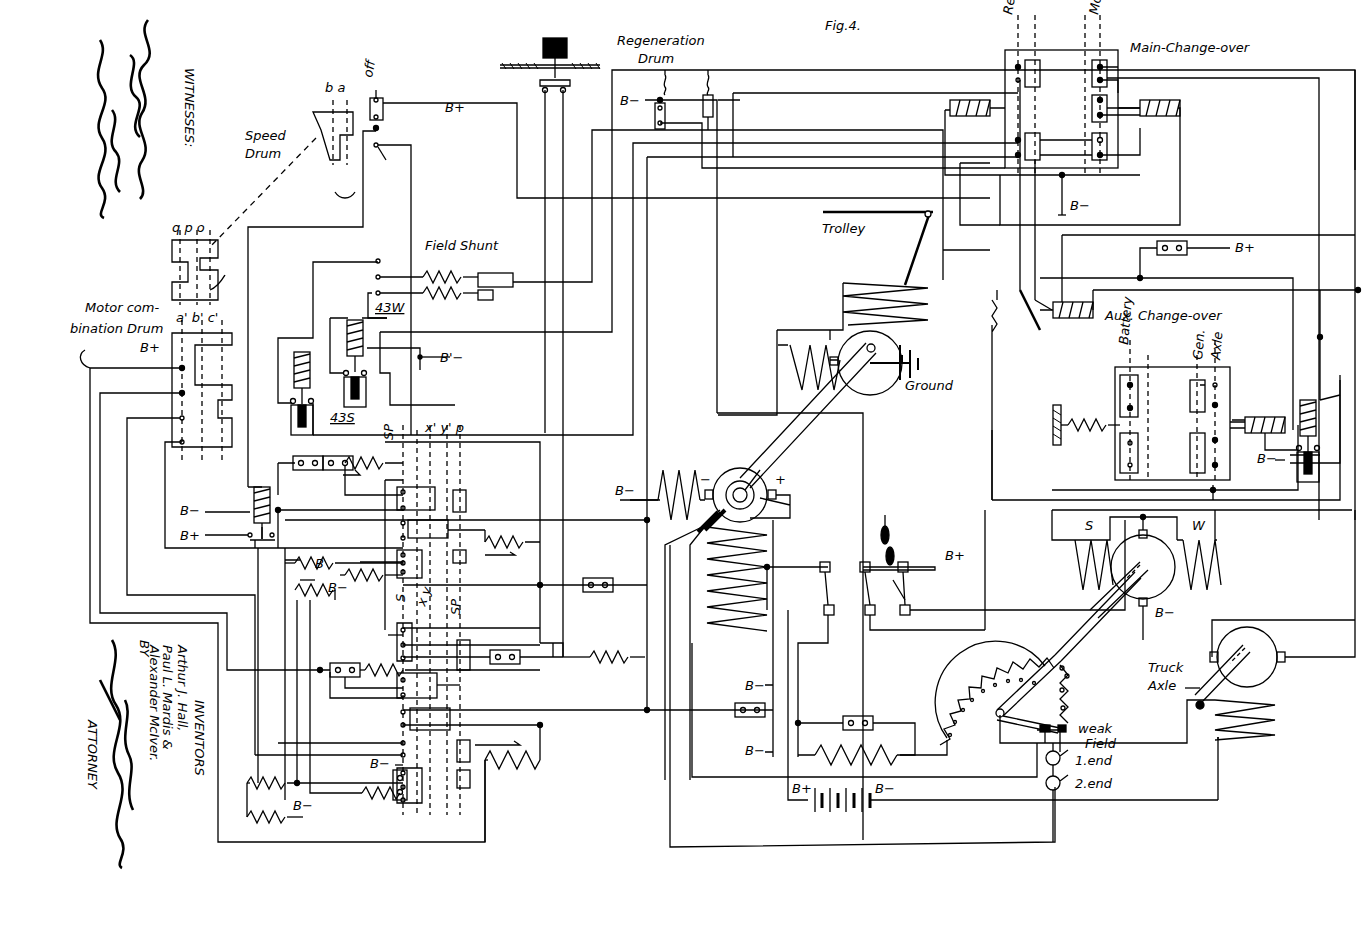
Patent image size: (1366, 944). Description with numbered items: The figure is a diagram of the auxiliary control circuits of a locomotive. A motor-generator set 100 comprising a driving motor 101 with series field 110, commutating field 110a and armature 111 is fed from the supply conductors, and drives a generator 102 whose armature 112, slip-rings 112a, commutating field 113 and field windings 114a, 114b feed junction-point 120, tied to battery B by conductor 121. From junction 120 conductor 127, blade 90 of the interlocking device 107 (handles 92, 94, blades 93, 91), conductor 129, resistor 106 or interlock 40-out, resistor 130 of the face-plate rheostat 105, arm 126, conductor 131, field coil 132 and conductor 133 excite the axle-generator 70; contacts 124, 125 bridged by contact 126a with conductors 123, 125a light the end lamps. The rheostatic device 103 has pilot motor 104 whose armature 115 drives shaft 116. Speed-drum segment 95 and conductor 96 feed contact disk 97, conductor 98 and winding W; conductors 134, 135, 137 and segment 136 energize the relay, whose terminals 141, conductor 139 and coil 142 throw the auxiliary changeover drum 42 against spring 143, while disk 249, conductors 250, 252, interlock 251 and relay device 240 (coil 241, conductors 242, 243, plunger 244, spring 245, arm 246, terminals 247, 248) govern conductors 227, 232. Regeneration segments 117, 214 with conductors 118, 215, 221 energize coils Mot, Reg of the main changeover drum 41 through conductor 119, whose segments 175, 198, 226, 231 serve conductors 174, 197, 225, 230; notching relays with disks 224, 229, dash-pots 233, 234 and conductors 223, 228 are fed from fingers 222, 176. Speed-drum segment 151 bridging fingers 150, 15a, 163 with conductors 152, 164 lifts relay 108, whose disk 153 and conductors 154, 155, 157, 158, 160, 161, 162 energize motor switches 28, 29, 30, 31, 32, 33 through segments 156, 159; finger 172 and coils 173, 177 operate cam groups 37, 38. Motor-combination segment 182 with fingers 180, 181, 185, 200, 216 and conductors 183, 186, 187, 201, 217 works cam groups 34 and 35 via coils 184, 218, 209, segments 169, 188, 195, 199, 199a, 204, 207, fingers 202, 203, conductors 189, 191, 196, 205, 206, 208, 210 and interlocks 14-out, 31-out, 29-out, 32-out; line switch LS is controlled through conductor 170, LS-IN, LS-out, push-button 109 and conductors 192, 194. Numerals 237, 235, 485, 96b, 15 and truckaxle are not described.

The contact segment 151 is at (172, 252).
The contact segment 95 is at (388, 100).
The conductor 96 is at (686, 139).
The control finger 150 is at (394, 123).
The control finger 15a is at (330, 308).
The control finger 163 is at (392, 160).
The conductor 152 is at (341, 188).
The conductor 164 is at (411, 200).
The control finger 180 is at (227, 280).
The conductor 223 is at (313, 300).
The control finger 222 is at (384, 251).
The control finger 172 is at (384, 271).
The control finger 176 is at (383, 299).
The actuating coil 173 is at (450, 268).
The actuating coil 177 is at (450, 298).
The cam group 37 is at (495, 271).
The cam group 38 is at (492, 299).
The conductor 174 is at (728, 196).
The contact disk 224 is at (292, 402).
The dash-pot 233 is at (279, 417).
The conductor 228 is at (356, 336).
The dash-pot 234 is at (346, 389).
The contact disk 229 is at (411, 368).
The wire 237 is at (867, 295).
The wire 235 is at (400, 400).
The conductor 230 is at (785, 62).
The conductor 225 is at (665, 426).
The conductor 118 is at (795, 143).
The conductor 217 is at (463, 563).
The contact segment 182 is at (209, 390).
The conductor 183 is at (84, 357).
The control finger 181 is at (287, 604).
The control finger 185 is at (180, 393).
The conductor 186 is at (243, 670).
The control finger 200 is at (191, 580).
The control finger 216 is at (163, 438).
The conductor 201 is at (135, 522).
The motor switch relay 108 is at (254, 493).
The contact disk 153 is at (262, 665).
The conductor 162 is at (283, 578).
The conductor 206 is at (340, 520).
The conductor 205 is at (340, 626).
The conductor 208 is at (340, 479).
The interlock 29-out is at (304, 453).
The interlock 32-out is at (347, 453).
The conductor 210 is at (373, 453).
The actuating coil 209 is at (384, 455).
The conductor 154 is at (300, 560).
The motor switch 30 is at (349, 552).
The conductor 155 is at (337, 560).
The conductor 157 is at (385, 560).
The motor switch 29 is at (360, 585).
The motor switch 32 is at (320, 593).
The conductor 158 is at (305, 630).
The conductor 160 is at (297, 645).
The contact segment 169 is at (380, 630).
The interlock 31-out is at (340, 661).
The switch blade 90 is at (593, 624).
The conductor 189 is at (374, 687).
The conductor 187 is at (328, 696).
The control finger 203 is at (388, 734).
The control finger 202 is at (330, 747).
The conductor 161 is at (349, 693).
The motor switch 33 is at (272, 797).
The motor switch 28 is at (275, 826).
The motor switch 31 is at (356, 709).
The contact segment 159 is at (419, 794).
The wire 485 is at (445, 845).
The cam group 35 is at (462, 542).
The contact segment 207 is at (422, 495).
The contact segment 199 is at (445, 530).
The conductor 194 is at (565, 507).
The actuating coil 218 is at (494, 540).
The contact segment 156 is at (440, 575).
The conductor 196 is at (525, 592).
The interlock 14-out is at (596, 576).
The cam group 34 is at (491, 617).
The contact segment 195 is at (471, 649).
The contact LS-IN is at (483, 651).
The conductor 192 is at (545, 122).
The conductor 170 is at (563, 628).
The line switch LS is at (604, 646).
The conductor 191 is at (520, 665).
The contact segment 188 is at (460, 695).
The contact segment 199a is at (472, 719).
The interlock LS-out is at (588, 718).
The contact segment 204 is at (488, 759).
The actuating coil 184 is at (492, 763).
The push-button 109 is at (549, 65).
The contact segment 214 is at (713, 100).
The contact segment 117 is at (655, 125).
The conductor 215 is at (863, 457).
The contact segment 231 is at (901, 105).
The series exciting field winding 110 is at (878, 268).
The conductor 221 is at (950, 252).
The motor-generator set 100 is at (790, 349).
The commutating field winding 110a is at (788, 350).
The driving motor 101 is at (878, 359).
The armature 111 is at (820, 415).
The generator 102 is at (720, 614).
The armature 112 is at (734, 490).
The commutating field winding 113 is at (667, 484).
The conductor 197 is at (640, 474).
The slip-rings 112a is at (789, 506).
The exciting field winding 114a is at (757, 579).
The exciting field winding 114b is at (721, 611).
The junction-point 120 is at (797, 577).
The conductor 123 is at (864, 707).
The conductor 127 is at (825, 556).
The conductor 121 is at (816, 664).
The conductor 129 is at (798, 668).
The electrical interlock 40-out is at (857, 714).
The auxiliary resistor 106 is at (881, 747).
The operating handle 92 is at (888, 549).
The interlocking knife-blade device 107 is at (899, 540).
The switch blade 93 is at (859, 588).
The handle 94 is at (886, 580).
The switch blade 91 is at (927, 596).
The conductor 139 is at (1143, 594).
The battery B is at (1003, 720).
The conductor 125a is at (720, 845).
The resistor 130 is at (977, 693).
The face-plate rheostat 105 is at (978, 717).
The power-operated rheostatic device 103 is at (1048, 693).
The shaft 116 is at (1078, 622).
The swinging arm 126 is at (1050, 694).
The insulated contact member 126a is at (1051, 707).
The stationary contact member 124 is at (1035, 738).
The conductor 131 is at (1107, 721).
The stationary contact member 125 is at (1035, 750).
The conductor 133 is at (1143, 800).
The exciting field coil 132 is at (1260, 720).
The axle-generator 70 is at (1253, 655).
The conductor 134 is at (1262, 620).
The conductor 137 is at (1320, 672).
The truck axle truckaxle is at (1222, 677).
The pilot motor 104 is at (1143, 561).
The armature 115 is at (1132, 590).
The conductor 98 is at (978, 442).
The wire 96b is at (1228, 515).
The main-circuit changeover drum 41 is at (1061, 95).
The contact segment 136 is at (1189, 290).
The contact segment 198 is at (1100, 108).
The contact segment 226 is at (1043, 145).
The contact segment 175 is at (1090, 144).
The actuating coil Reg is at (1025, 137).
The actuating coil Mot is at (1106, 162).
The conductor 119 is at (1099, 194).
The conductor 227 is at (1012, 220).
The conductor 232 is at (1056, 283).
The conductor 242 is at (1208, 268).
The conductor 135 is at (1320, 247).
The interlock 251 is at (1193, 256).
The conductor 252 is at (1132, 264).
The conductor 250 is at (1200, 308).
The conductor 243 is at (1260, 293).
The actuating coil 241 is at (1112, 295).
The core or plunger 244 is at (1066, 319).
The spring 245 is at (1002, 389).
The oscillatable switch arm 246 is at (1002, 305).
The stationary terminal 247 is at (1015, 313).
The contact terminal 248 is at (1037, 318).
The relay device 240 is at (1070, 350).
The auxiliary changeover drum 42 is at (1172, 410).
The spring 143 is at (1075, 431).
The actuating coil 142 is at (1255, 415).
The relay 15 is at (1313, 371).
The upper contact disk 249 is at (1333, 405).
The stationary contact terminals 141 is at (1302, 430).
The contact disk 97 is at (1310, 478).